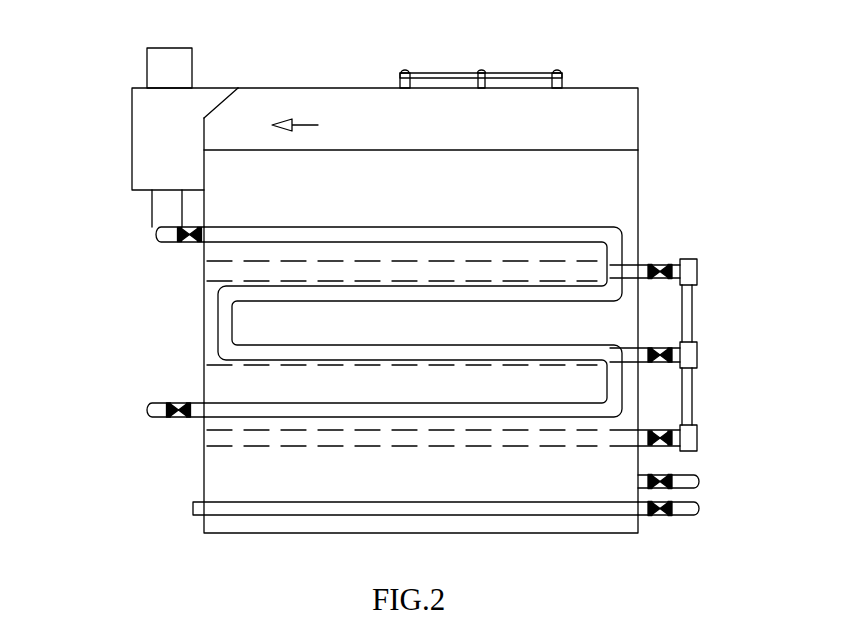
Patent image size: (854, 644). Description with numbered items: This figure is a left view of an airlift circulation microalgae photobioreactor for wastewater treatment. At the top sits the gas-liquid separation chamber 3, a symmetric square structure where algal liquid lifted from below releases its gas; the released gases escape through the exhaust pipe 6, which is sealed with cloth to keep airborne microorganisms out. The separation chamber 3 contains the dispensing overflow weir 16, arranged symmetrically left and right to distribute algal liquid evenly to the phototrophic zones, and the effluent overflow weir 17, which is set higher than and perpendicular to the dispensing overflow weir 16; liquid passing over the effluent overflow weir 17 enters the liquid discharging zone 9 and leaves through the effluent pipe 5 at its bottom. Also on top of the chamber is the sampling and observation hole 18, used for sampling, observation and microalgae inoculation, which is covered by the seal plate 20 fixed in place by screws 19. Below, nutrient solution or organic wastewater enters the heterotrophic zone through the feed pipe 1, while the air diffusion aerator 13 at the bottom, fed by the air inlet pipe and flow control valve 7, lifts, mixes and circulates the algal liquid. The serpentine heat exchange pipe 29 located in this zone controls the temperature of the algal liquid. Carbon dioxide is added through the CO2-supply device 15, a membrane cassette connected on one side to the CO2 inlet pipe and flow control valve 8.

The feed pipe 1 is at (648, 480).
The gas-liquid separation chamber 3 is at (613, 118).
The effluent pipe 5 is at (162, 212).
The exhaust pipe 6 is at (172, 70).
The air inlet pipe and flow control valve 7 is at (648, 508).
The CO2 inlet pipe and flow control valve 8 is at (660, 267).
The liquid discharging zone 9 is at (152, 148).
The air diffusion aerator 13 is at (228, 510).
The CO2-supply device 15 is at (227, 435).
The dispensing overflow weir 16 is at (313, 150).
The effluent overflow weir 17 is at (238, 88).
The sampling and observation hole 18 is at (537, 88).
The screws 19 is at (485, 72).
The seal plate 20 is at (433, 78).
The serpentine heat exchange pipe 29 is at (162, 400).